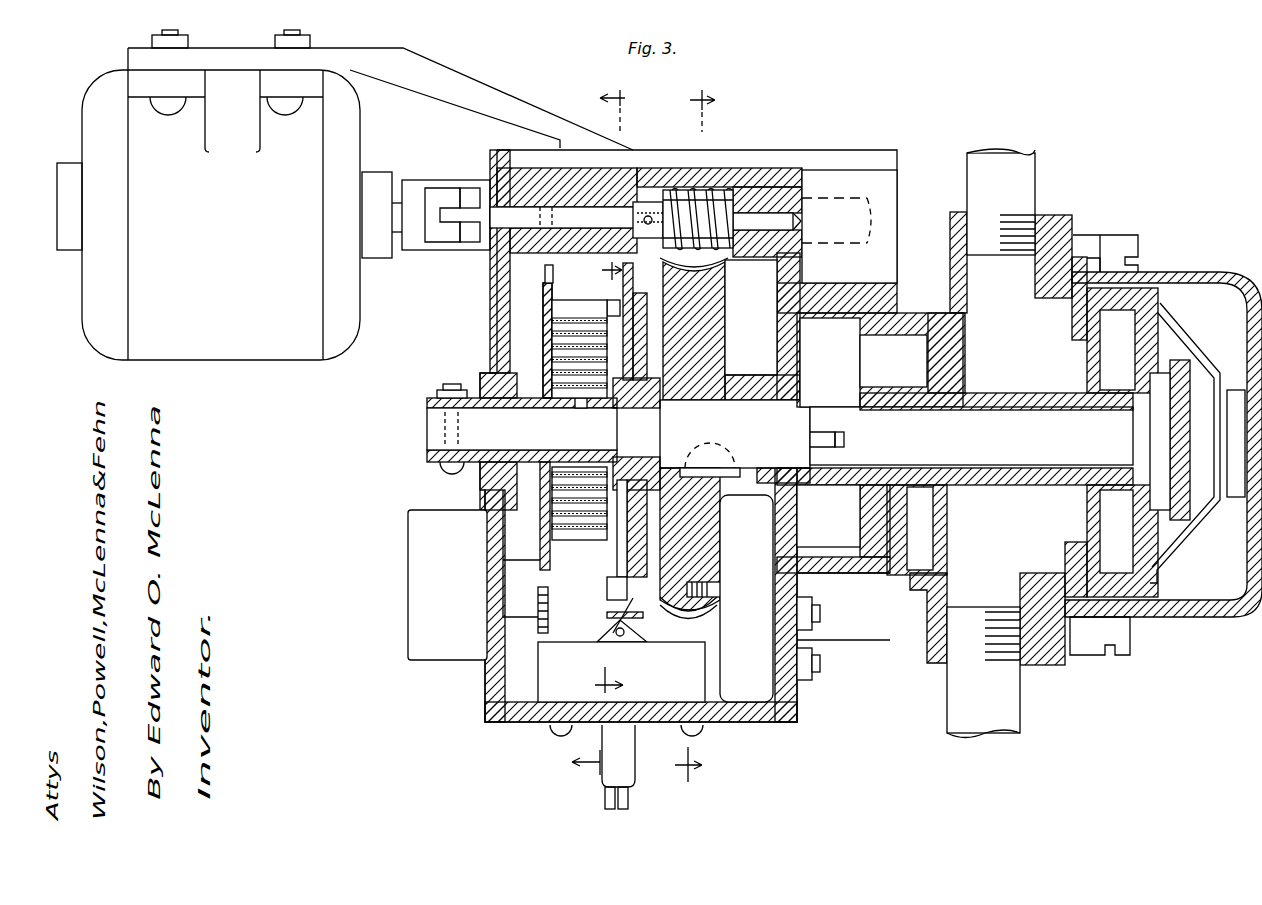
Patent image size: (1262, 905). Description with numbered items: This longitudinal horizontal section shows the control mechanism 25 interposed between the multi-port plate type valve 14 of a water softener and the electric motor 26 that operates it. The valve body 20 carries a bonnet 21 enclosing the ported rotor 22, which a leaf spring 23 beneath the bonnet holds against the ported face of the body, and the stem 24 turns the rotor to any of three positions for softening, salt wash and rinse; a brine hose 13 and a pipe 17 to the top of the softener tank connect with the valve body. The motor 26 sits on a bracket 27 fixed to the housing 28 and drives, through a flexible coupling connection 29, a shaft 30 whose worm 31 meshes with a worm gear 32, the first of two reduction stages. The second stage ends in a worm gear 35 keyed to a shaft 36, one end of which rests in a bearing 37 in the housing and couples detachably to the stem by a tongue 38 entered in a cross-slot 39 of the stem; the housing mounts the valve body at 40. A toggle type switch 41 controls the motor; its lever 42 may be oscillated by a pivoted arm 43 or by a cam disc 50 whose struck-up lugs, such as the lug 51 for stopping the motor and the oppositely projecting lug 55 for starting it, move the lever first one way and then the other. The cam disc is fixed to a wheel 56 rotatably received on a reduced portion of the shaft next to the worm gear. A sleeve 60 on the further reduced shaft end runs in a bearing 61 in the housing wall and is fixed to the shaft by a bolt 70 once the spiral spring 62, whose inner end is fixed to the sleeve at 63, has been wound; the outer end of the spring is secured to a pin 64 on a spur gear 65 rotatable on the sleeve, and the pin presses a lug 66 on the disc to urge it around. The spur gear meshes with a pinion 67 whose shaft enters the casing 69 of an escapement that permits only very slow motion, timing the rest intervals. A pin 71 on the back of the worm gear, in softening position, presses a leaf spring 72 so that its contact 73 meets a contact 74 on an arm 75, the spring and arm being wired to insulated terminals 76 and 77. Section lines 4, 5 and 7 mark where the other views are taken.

The section line 4- 4 is at (695, 435).
The section line 5- 5 is at (598, 431).
The section line 7- 7 is at (608, 481).
The hose 13 is at (975, 180).
The multi-port plate type valve 14 is at (1184, 258).
The pipe 17 is at (1010, 708).
The valve body 20 is at (935, 607).
The bonnet 21 is at (1190, 617).
The ported rotor 22 is at (1163, 305).
The leaf spring 23 is at (1224, 382).
The valve stem 24 is at (971, 436).
The control mechanism 25 is at (471, 693).
The electric motor 26 is at (207, 355).
The bracket 27 is at (478, 98).
The housing 28 is at (492, 318).
The flexible coupling connection 29 is at (410, 247).
The shaft 30 is at (578, 210).
The worm 31 is at (702, 190).
The worm gear 32 is at (812, 212).
The worm gear 35 is at (712, 340).
The shaft 36 is at (733, 415).
The bearing 37 is at (803, 396).
The tongue 38 is at (836, 436).
The cross-slot 39 is at (846, 442).
The mounting 40 is at (870, 575).
The toggle type switch 41 is at (545, 658).
The switch lever 42 is at (688, 620).
The arm 43 is at (607, 615).
The cam disc 50 is at (620, 557).
The lug 51 is at (607, 588).
The lug 55 is at (643, 240).
The wheel 56 is at (648, 500).
The sleeve 60 is at (550, 412).
The bearing 61 is at (548, 380).
The spiral spring 62 is at (557, 333).
The spring fixing point 63 is at (582, 415).
The pin 64 is at (607, 310).
The spur gear 65 is at (550, 512).
The lug 66 is at (612, 300).
The pinion 67 is at (550, 628).
The escapement casing 69 is at (415, 636).
The bolt 70 is at (440, 470).
The pin 71 is at (729, 582).
The leaf spring 72 is at (752, 602).
The contact 73 is at (728, 618).
The contact 74 is at (740, 662).
The arm 75 is at (722, 688).
The terminal 76 is at (820, 614).
The terminal 77 is at (820, 664).